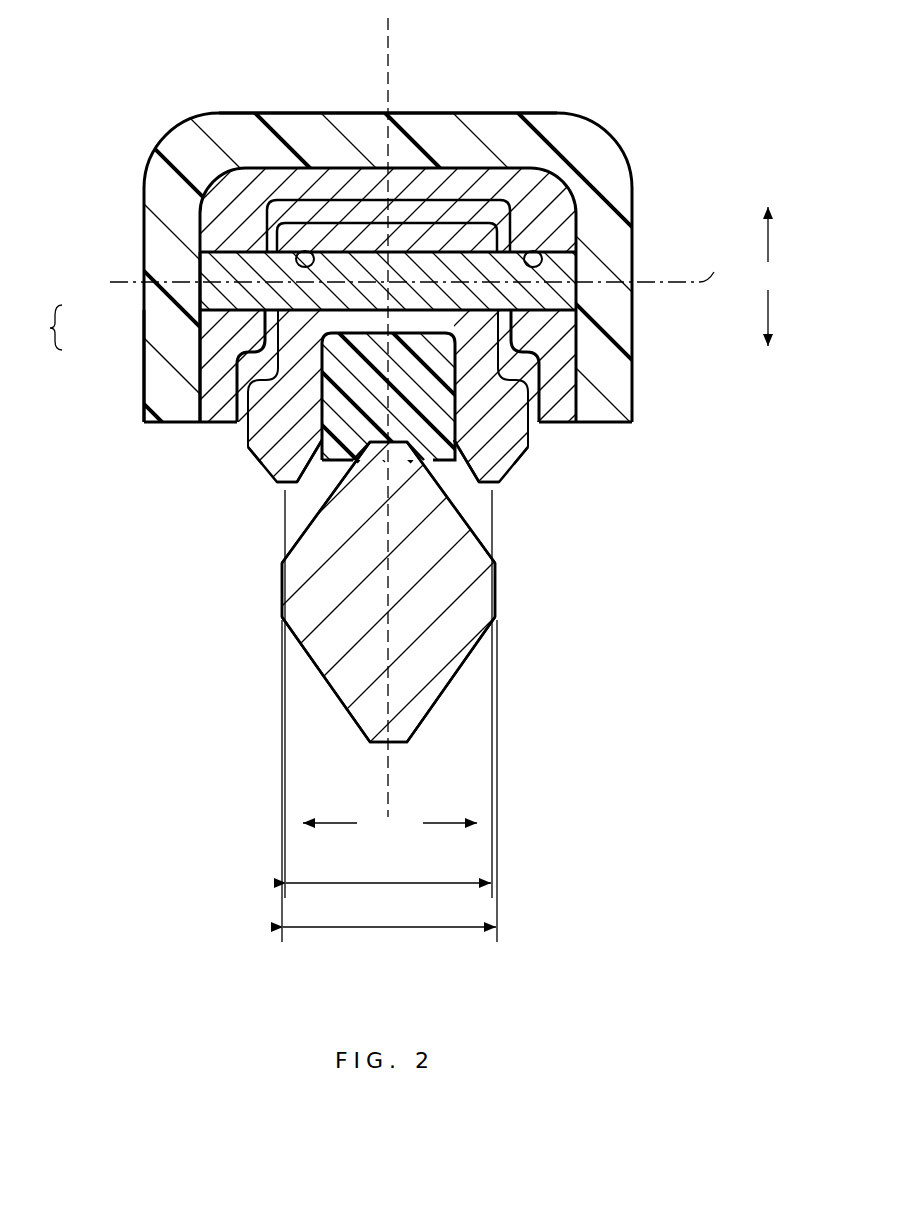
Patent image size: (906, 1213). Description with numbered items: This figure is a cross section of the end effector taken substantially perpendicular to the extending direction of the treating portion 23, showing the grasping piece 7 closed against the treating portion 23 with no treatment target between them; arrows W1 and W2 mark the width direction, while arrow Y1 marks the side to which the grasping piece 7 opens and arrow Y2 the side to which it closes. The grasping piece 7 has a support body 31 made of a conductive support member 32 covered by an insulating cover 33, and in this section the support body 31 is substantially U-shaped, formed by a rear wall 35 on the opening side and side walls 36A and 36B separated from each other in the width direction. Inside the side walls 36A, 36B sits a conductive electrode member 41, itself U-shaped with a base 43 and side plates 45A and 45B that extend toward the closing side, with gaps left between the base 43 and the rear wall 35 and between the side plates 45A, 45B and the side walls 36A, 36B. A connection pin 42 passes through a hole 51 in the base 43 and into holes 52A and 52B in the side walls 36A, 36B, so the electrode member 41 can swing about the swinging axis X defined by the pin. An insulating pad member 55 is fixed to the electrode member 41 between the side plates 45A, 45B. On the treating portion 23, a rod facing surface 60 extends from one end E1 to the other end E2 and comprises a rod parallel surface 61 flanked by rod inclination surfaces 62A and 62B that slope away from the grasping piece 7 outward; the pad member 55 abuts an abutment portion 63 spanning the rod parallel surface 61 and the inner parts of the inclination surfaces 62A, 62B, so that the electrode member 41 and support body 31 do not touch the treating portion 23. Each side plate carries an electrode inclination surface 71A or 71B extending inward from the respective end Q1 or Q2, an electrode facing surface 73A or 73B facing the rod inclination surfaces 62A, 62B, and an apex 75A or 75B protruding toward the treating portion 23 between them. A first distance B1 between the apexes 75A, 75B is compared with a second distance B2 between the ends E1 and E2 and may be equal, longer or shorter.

The grasping piece 7 is at (417, 240).
The swinging axis X is at (420, 268).
The opening side direction Y1 is at (787, 234).
The closing side direction Y2 is at (787, 318).
The support body 31 is at (385, 392).
The support member 32 is at (230, 345).
The cover 33 is at (170, 318).
The rear wall 35 is at (418, 135).
The first side wall 36A is at (167, 376).
The second side wall 36B is at (625, 188).
The electrode member 41 is at (348, 243).
The connection pin 42 is at (565, 262).
The base 43 is at (467, 229).
The first side plate 45A is at (245, 381).
The second side plate 45B is at (477, 337).
The hole 51 is at (308, 256).
The hole 52A is at (225, 262).
The hole 52B is at (540, 256).
The pad member 55 is at (434, 370).
The rod facing surface 60 is at (489, 532).
The rod parallel surface 61 is at (410, 418).
The first rod inclination surface 62A is at (297, 540).
The second rod inclination surface 62B is at (490, 548).
The abutment portion 63 is at (356, 445).
The first electrode inclination surface 71A is at (258, 461).
The second electrode inclination surface 71B is at (518, 460).
The first electrode facing surface 73A is at (313, 469).
The second electrode facing surface 73B is at (466, 470).
The first apex 75A is at (283, 487).
The second apex 75B is at (495, 488).
The one end of electrode member Q1 is at (250, 446).
The other end of electrode member Q2 is at (527, 441).
The one end of treating portion E1 is at (281, 566).
The other end of treating portion E2 is at (497, 566).
The treating portion 23 is at (420, 713).
The width direction arrow (one side) W1 is at (330, 839).
The width direction arrow (other side) W2 is at (450, 839).
The first distance B1 is at (388, 703).
The second distance B2 is at (389, 790).